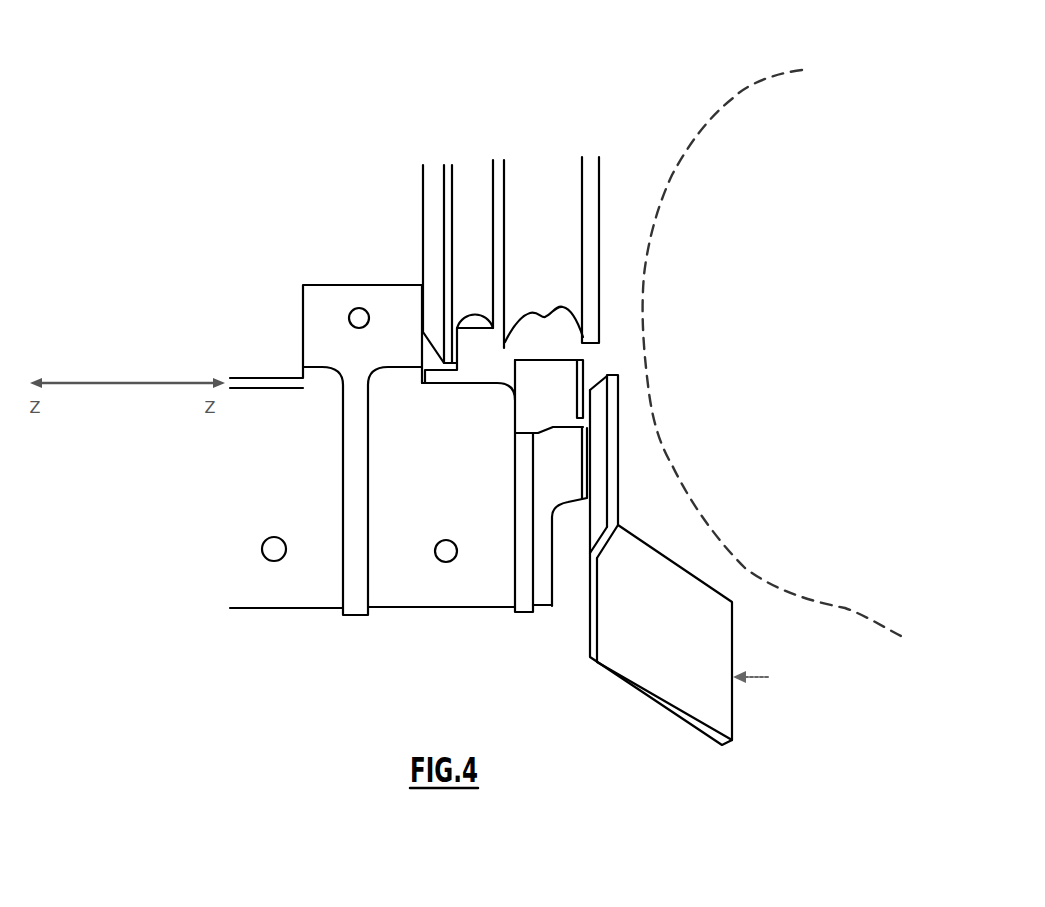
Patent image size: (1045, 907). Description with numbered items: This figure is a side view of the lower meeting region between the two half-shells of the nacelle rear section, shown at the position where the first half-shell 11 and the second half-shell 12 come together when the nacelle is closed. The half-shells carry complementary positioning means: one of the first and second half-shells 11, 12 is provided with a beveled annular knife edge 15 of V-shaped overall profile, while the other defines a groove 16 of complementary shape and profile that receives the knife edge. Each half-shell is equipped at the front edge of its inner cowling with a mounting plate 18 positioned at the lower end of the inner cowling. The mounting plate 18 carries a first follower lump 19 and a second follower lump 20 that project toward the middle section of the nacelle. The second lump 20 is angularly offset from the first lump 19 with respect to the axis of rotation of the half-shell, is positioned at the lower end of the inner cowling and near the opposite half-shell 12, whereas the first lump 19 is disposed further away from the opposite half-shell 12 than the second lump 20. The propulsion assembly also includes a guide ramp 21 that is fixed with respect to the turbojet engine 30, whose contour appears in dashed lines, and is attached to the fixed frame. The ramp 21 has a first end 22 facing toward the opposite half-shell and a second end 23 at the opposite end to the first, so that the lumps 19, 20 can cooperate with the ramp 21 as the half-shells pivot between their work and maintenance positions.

The first half-shell 11 is at (241, 487).
The second half-shell 12 is at (196, 277).
The beveled annular knife edge 15 is at (480, 340).
The groove 16 is at (475, 268).
The mounting plate 18 is at (395, 557).
The first follower lump 19 is at (555, 482).
The second follower lump 20 is at (545, 386).
The guide ramp 21 is at (686, 544).
The first end of the ramp 22 is at (618, 380).
The second end of the ramp 23 is at (762, 677).
The turbojet engine 30 is at (733, 98).